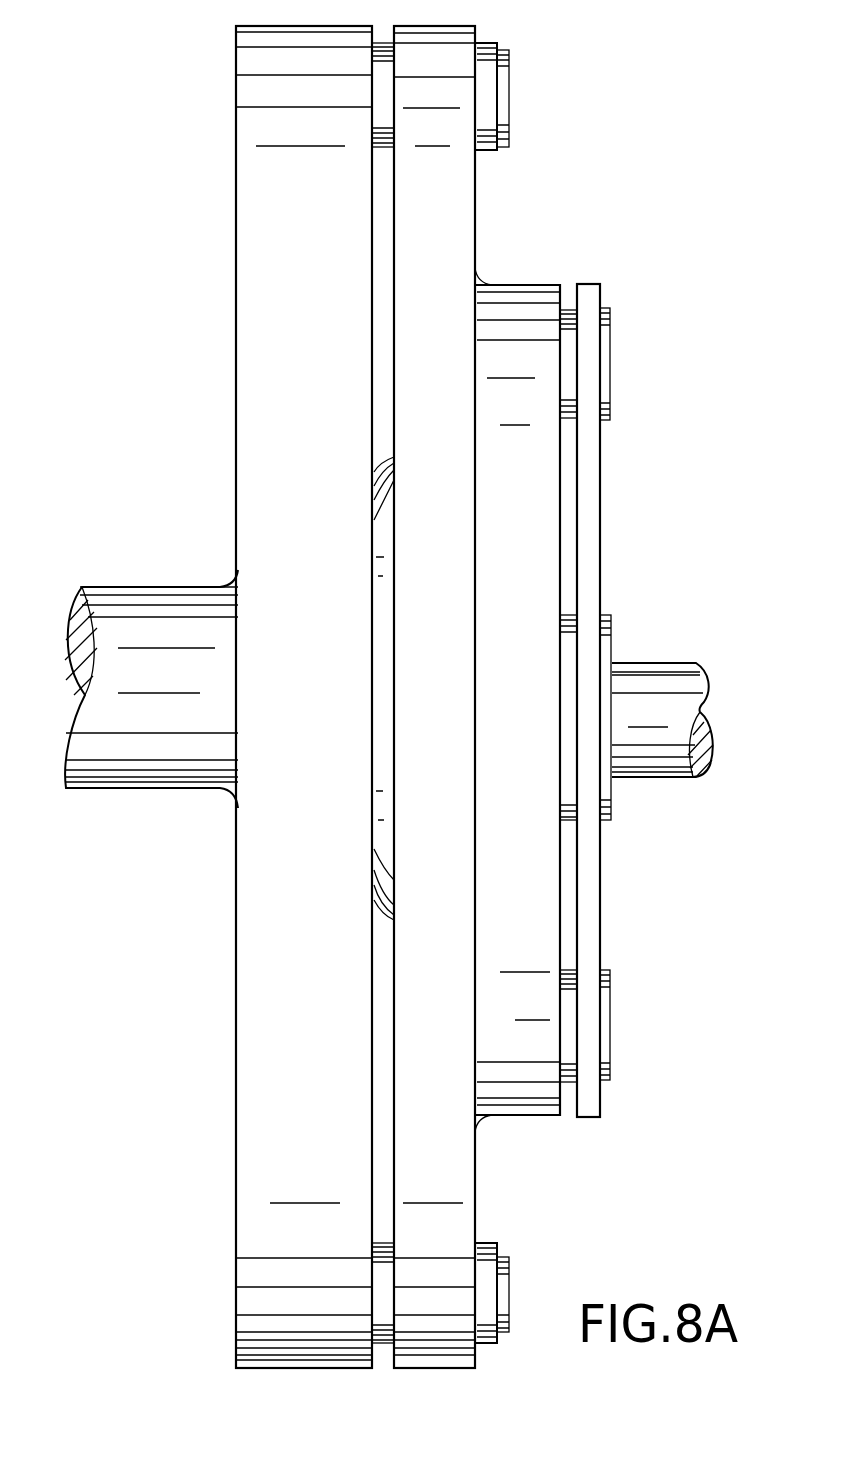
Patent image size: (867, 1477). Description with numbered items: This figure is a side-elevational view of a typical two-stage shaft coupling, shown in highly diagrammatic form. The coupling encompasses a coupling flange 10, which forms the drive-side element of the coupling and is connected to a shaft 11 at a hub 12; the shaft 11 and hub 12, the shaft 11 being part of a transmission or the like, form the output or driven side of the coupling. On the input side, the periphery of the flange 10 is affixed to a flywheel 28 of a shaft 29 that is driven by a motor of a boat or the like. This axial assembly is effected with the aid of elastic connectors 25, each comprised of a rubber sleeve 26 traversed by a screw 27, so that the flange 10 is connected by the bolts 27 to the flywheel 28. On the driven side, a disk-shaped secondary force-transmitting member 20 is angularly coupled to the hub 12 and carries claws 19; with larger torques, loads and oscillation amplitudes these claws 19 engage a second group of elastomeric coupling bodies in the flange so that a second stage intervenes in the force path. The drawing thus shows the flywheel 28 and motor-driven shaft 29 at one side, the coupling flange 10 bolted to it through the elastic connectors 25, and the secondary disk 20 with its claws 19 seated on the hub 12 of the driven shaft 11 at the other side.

The coupling flange 10 is at (453, 193).
The shaft 11 is at (685, 674).
The hub 12 is at (612, 814).
The claws 19 is at (571, 357).
The secondary force-transmitting member 20 is at (588, 888).
The elastic connectors 25 is at (504, 1245).
The rubber sleeve 26 is at (497, 44).
The screw 27 is at (505, 96).
The flywheel 28 is at (268, 948).
The shaft 29 is at (135, 617).